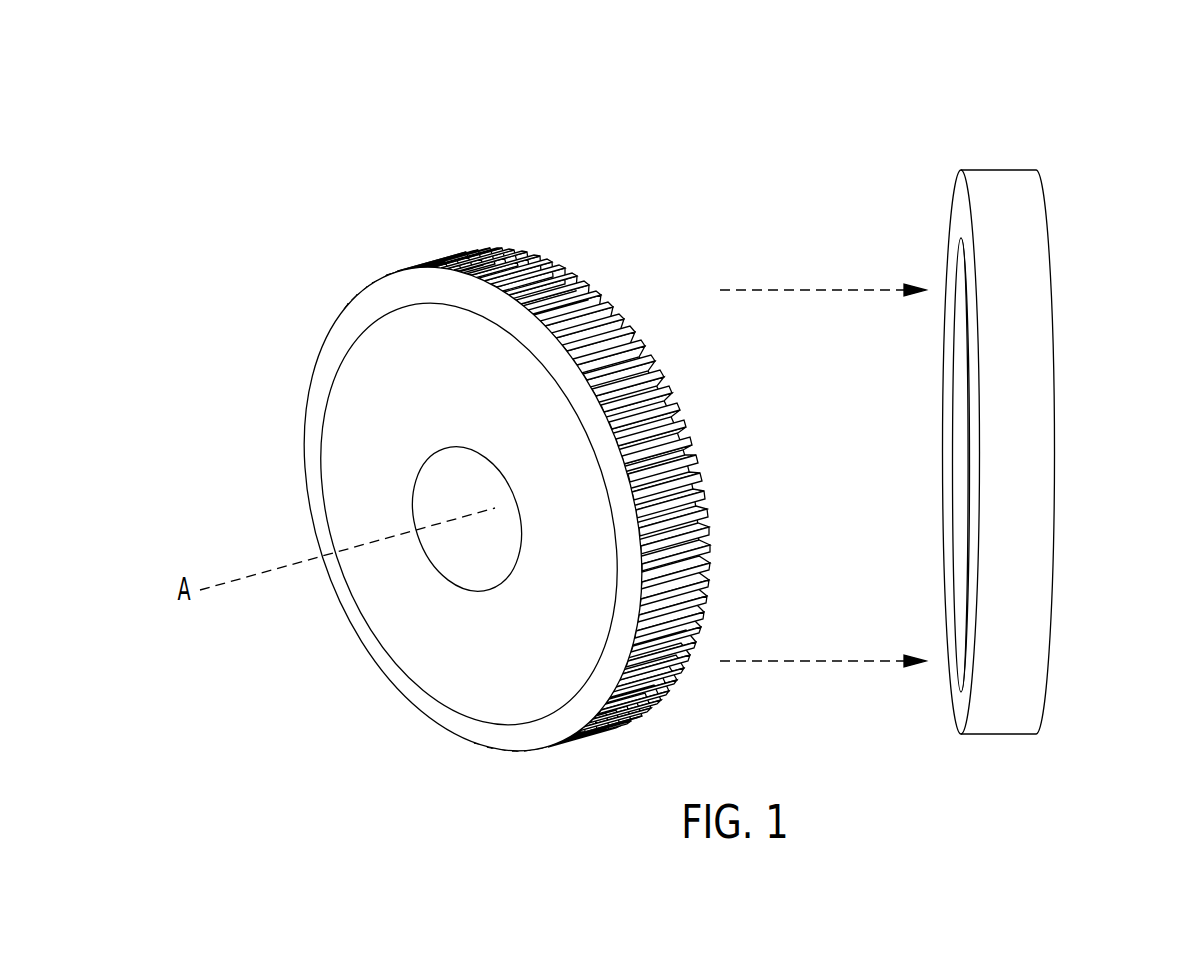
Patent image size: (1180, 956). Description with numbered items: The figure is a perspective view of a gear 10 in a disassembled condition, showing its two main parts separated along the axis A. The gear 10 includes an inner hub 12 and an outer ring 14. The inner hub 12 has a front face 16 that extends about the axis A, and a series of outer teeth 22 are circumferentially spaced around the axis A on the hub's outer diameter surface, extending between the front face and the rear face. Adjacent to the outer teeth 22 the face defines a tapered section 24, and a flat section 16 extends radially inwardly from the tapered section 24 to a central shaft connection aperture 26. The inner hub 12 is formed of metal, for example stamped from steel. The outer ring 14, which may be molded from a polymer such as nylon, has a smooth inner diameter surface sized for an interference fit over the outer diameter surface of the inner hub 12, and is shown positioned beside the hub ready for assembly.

The gear 10 is at (1093, 136).
The inner hub 12 is at (503, 467).
The outer ring 14 is at (1058, 448).
The front face 16 is at (335, 397).
The outer teeth 22 is at (425, 265).
The tapered section 24 is at (387, 302).
The shaft connection aperture 26 is at (425, 480).